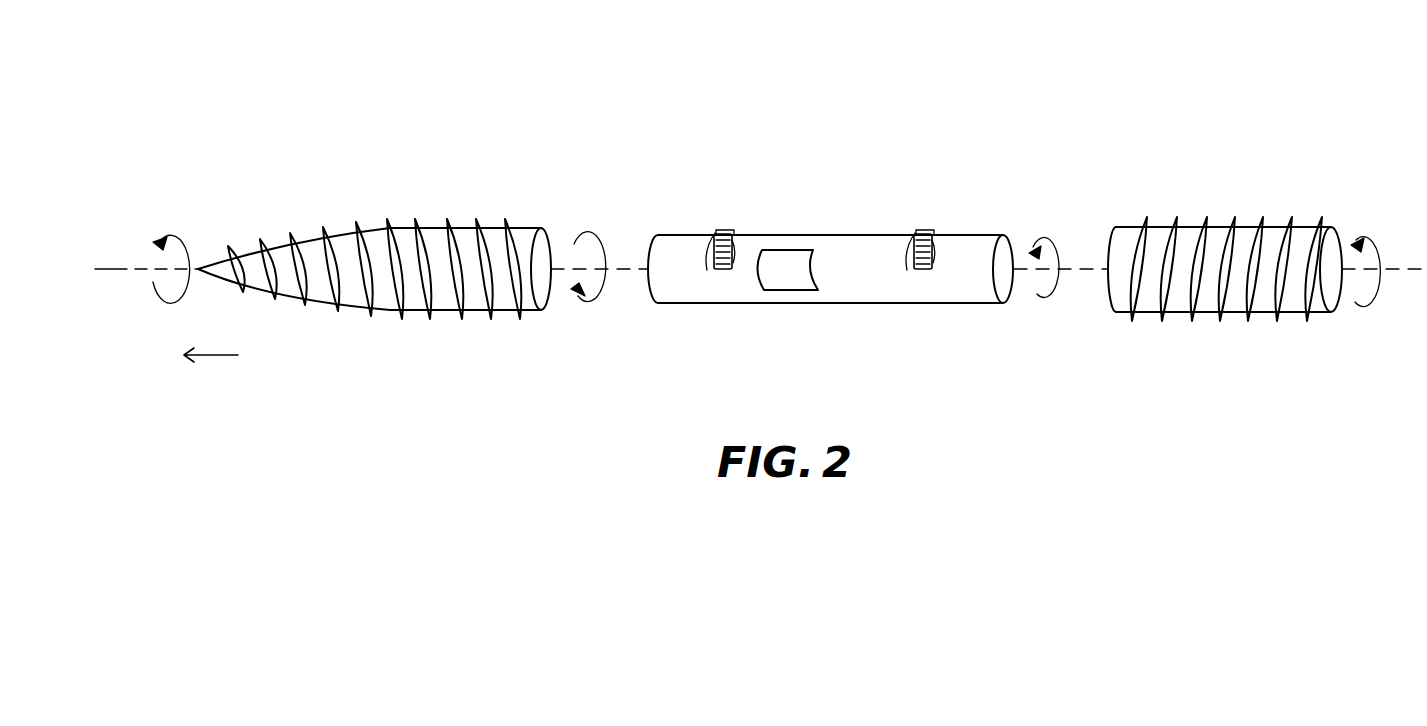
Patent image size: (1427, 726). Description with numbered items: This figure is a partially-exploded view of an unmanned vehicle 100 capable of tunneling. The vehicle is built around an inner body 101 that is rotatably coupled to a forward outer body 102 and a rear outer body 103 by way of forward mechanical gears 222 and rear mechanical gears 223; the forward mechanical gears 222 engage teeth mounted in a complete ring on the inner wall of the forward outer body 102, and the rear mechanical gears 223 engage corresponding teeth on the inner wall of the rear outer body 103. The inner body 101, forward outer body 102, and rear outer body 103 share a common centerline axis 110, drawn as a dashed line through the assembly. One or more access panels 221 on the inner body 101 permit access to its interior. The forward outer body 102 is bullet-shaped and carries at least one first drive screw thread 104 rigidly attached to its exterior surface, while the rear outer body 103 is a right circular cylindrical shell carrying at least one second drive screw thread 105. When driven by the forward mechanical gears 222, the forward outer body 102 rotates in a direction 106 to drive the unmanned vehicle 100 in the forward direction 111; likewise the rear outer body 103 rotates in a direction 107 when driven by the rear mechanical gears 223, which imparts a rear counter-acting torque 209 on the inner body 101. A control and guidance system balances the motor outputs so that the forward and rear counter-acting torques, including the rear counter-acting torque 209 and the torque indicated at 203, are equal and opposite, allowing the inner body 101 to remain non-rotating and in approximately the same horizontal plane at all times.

The unmanned vehicle 100 is at (1007, 120).
The inner body 101 is at (820, 234).
The forward outer body 102 is at (450, 227).
The rear outer body 103 is at (1125, 226).
The first drive screw thread 104 is at (373, 222).
The second drive screw thread 105 is at (1233, 216).
The direction of rotation of forward outer body 106 is at (164, 236).
The direction of rotation of rear outer body 107 is at (1359, 305).
The common centerline axis 110 is at (112, 267).
The forward direction 111 is at (213, 356).
The rotation of front section 203 is at (591, 303).
The rear counter-acting torque 209 is at (1040, 300).
The access panel 221 is at (790, 291).
The forward mechanical gear 222 is at (722, 231).
The rear mechanical gear 223 is at (923, 231).